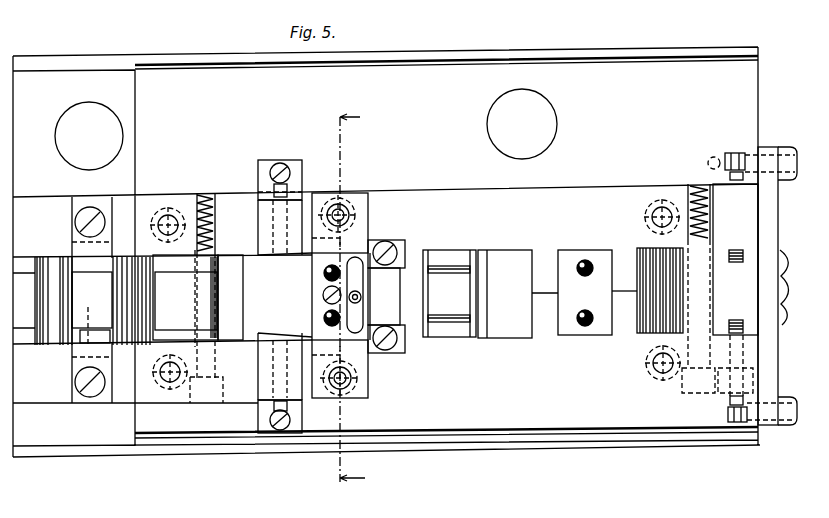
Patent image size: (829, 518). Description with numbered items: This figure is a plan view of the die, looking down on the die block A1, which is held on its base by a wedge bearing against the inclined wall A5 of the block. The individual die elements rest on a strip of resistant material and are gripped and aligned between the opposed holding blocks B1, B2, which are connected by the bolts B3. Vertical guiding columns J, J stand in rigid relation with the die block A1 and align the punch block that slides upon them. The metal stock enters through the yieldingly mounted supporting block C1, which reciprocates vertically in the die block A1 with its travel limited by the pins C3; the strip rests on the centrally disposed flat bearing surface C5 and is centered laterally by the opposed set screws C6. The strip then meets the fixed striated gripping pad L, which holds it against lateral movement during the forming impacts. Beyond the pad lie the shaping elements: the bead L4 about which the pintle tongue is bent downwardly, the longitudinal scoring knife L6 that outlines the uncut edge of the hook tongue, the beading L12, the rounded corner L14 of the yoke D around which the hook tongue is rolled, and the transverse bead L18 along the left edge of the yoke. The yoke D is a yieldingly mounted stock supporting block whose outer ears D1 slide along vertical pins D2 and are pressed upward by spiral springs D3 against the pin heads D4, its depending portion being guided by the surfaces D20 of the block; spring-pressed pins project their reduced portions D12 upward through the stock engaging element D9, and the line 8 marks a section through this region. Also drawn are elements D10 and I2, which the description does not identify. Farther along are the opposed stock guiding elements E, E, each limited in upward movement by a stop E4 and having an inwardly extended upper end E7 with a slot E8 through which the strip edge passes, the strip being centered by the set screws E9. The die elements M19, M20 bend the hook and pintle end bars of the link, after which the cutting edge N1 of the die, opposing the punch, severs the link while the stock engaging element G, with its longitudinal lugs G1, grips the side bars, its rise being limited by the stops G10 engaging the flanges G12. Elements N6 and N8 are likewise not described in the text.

The die block A1 is at (565, 420).
The inclined wall A5 is at (497, 447).
The holding block B1 is at (603, 387).
The holding block B2 is at (575, 197).
The bolts B3 is at (197, 207).
The supporting block C1 is at (725, 385).
The pins C3 is at (789, 287).
The flat bearing surface C5 is at (735, 290).
The set screws C6 is at (732, 153).
The stock supporting yoke D is at (365, 238).
The projecting lugs D1 is at (355, 200).
The vertical pins D2 is at (338, 200).
The spiral springs D3 is at (344, 203).
The pin heads D4 is at (332, 207).
The stock engaging element D9 is at (384, 296).
The pin D10 is at (326, 276).
The reduced portions D12 is at (372, 250).
The guiding surfaces D20 is at (352, 212).
The stock guiding elements E is at (262, 215).
The stop E4 is at (265, 160).
The inwardly extended upper end E7 is at (250, 338).
The slot E8 is at (265, 255).
The set screws E9 is at (272, 238).
The stock engaging element G is at (88, 328).
The lugs G1 is at (80, 257).
The stops G10 is at (73, 197).
The flanges G12 is at (100, 242).
The link I2 is at (583, 262).
The vertical guiding columns J is at (72, 112).
The gripping pad L is at (655, 255).
The bead L4 is at (518, 294).
The longitudinal scoring knife L6 is at (468, 267).
The beading L12 is at (400, 307).
The rounded corner L14 is at (400, 283).
The transverse bead L18 is at (327, 320).
The die element M19 is at (147, 292).
The die element M20 is at (223, 312).
The cutting edge N1 is at (137, 292).
The roller N6 is at (57, 333).
The roller N8 is at (127, 330).
The section line 8 is at (348, 302).